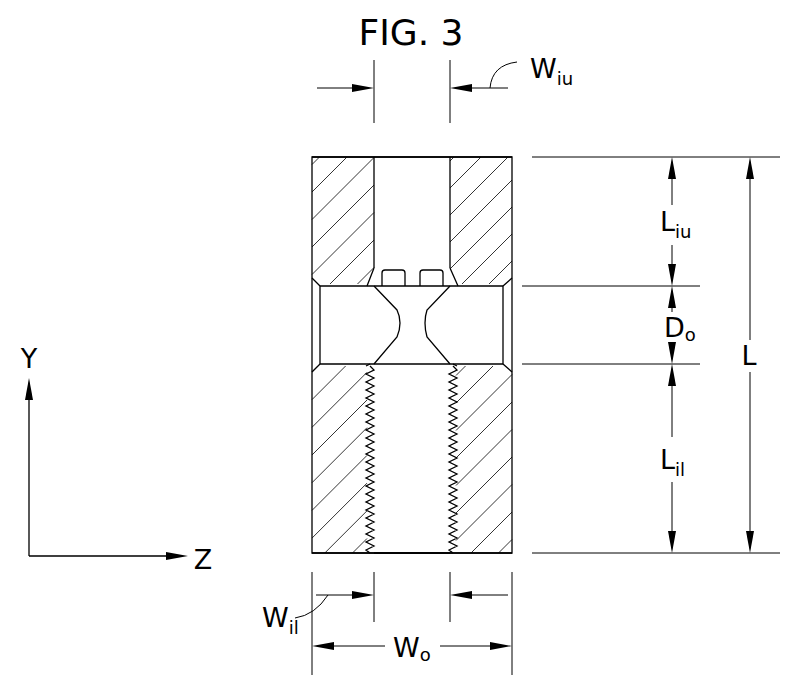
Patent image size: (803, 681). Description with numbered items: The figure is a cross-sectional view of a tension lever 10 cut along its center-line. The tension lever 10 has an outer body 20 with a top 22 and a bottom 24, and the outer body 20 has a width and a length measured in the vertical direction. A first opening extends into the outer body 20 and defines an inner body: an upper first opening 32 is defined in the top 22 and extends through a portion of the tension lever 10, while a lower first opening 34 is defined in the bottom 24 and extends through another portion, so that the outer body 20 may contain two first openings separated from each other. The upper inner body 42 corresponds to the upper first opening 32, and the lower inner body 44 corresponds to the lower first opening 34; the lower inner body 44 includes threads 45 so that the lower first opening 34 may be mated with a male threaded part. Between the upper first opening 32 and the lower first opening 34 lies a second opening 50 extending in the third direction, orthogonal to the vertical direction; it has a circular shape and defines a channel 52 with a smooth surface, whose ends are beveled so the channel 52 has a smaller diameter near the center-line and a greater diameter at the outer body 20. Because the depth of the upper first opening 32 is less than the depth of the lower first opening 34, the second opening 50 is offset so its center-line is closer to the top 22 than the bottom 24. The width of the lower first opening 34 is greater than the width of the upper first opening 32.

The tension lever 10 is at (352, 355).
The outer body 20 is at (513, 217).
The top 22 is at (512, 157).
The bottom 24 is at (512, 553).
The upper first opening 32 is at (442, 168).
The lower first opening 34 is at (397, 557).
The upper inner body 42 is at (374, 183).
The lower inner body 44 is at (368, 472).
The threads 45 is at (372, 554).
The second opening 50 is at (543, 308).
The channel 52 is at (349, 287).